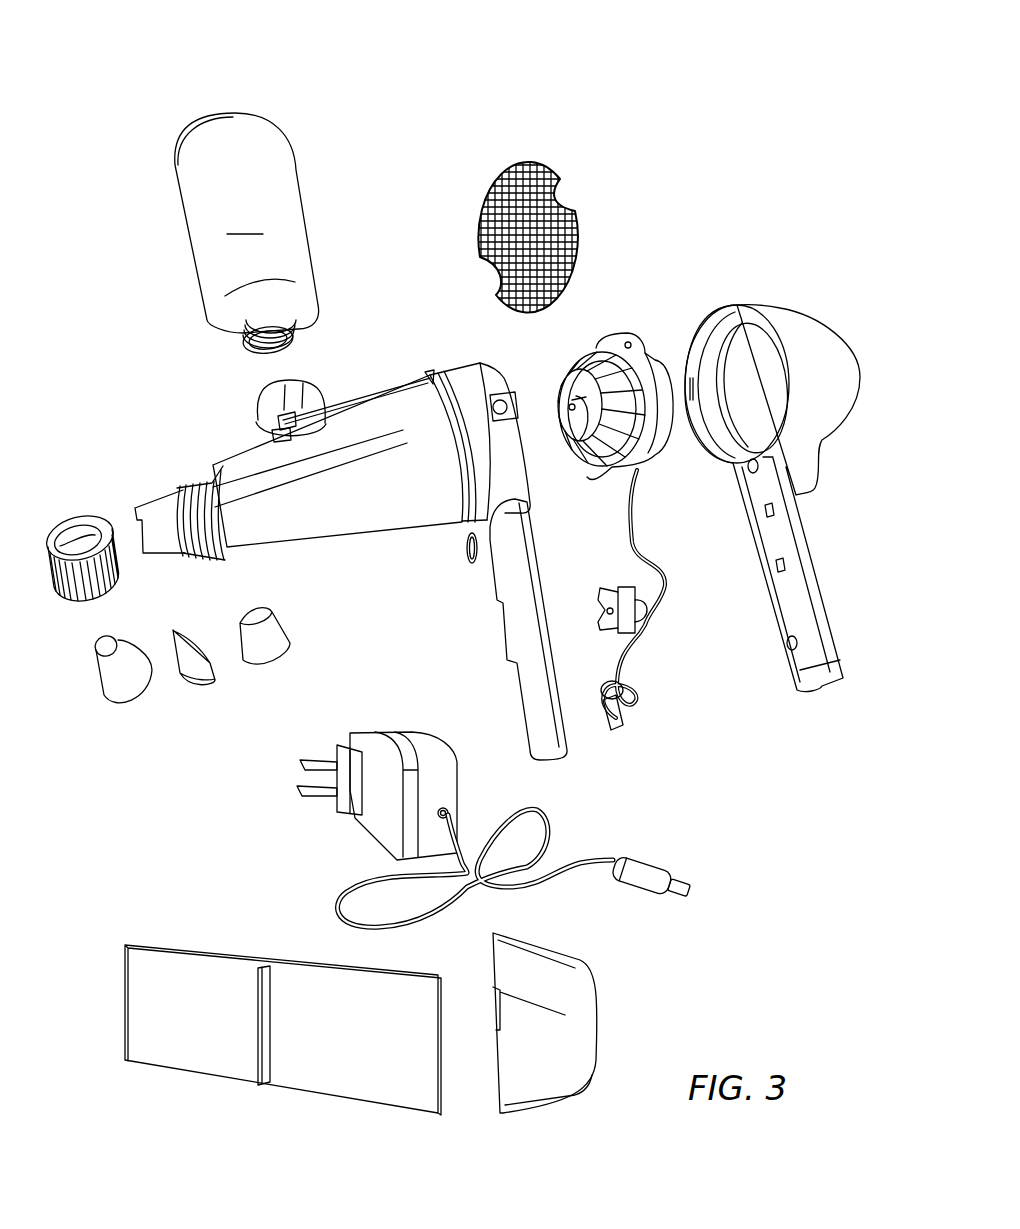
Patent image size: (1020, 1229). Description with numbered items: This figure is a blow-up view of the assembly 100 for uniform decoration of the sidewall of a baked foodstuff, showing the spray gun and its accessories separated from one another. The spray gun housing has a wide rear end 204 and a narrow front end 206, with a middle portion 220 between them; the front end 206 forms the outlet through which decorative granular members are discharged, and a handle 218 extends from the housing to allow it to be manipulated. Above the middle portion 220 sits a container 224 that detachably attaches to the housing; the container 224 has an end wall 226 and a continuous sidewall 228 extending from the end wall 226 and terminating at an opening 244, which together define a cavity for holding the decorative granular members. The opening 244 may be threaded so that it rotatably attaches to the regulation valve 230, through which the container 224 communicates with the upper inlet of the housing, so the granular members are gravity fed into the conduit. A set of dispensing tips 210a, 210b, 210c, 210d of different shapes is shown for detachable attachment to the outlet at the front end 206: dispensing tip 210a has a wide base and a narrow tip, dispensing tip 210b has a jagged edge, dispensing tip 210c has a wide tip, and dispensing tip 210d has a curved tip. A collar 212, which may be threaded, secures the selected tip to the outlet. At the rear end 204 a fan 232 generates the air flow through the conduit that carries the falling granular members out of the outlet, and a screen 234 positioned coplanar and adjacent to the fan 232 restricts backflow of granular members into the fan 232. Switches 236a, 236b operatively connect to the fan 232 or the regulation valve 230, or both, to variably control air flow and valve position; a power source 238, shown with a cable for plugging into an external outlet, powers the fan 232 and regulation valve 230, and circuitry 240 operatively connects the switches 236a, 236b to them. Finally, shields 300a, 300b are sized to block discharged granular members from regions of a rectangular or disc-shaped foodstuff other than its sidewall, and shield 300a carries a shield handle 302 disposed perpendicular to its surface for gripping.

The assembly 100 is at (774, 42).
The rear end 204 is at (812, 458).
The front end 206 is at (228, 555).
The dispensing tip 210a is at (155, 492).
The dispensing tip 210b is at (135, 700).
The dispensing tip 210c is at (208, 690).
The dispensing tip 210d is at (275, 668).
The collar 212 is at (80, 516).
The handle 218 is at (495, 640).
The middle portion 220 is at (462, 365).
The container 224 is at (322, 190).
The end wall 226 is at (207, 116).
The continuous sidewall 228 is at (245, 223).
The regulation valve 230 is at (272, 428).
The fan 232 is at (622, 340).
The screen 234 is at (556, 185).
The switch 236a is at (618, 590).
The switch 236b is at (470, 562).
The power source 238 is at (382, 827).
The circuitry 240 is at (622, 728).
The opening 244 is at (300, 335).
The shield 300a is at (118, 930).
The shield 300b is at (615, 1000).
The shield handle 302 is at (258, 1040).